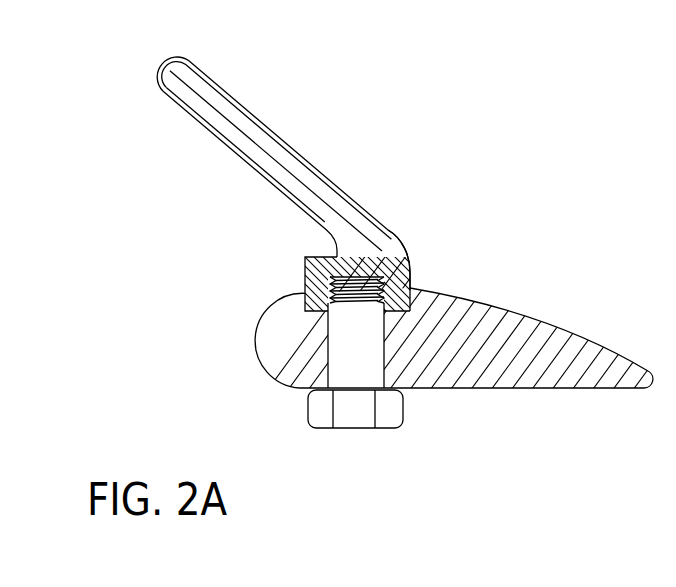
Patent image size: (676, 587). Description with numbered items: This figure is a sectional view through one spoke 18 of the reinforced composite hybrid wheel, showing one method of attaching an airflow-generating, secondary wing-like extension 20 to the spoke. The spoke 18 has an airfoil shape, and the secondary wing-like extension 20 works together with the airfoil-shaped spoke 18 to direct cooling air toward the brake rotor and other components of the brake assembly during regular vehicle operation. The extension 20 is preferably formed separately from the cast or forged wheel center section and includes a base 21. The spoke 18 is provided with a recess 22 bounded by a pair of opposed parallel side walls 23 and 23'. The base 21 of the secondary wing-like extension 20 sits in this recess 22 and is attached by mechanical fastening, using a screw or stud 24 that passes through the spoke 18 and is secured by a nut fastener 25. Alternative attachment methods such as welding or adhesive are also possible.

The spoke 18 is at (537, 332).
The secondary wing-like extension 20 is at (284, 160).
The base 21 is at (381, 279).
The recess 22 is at (306, 290).
The side wall 23 is at (341, 285).
The side wall 23' is at (441, 260).
The screw or stud 24 is at (350, 343).
The nut fastener 25 is at (357, 412).